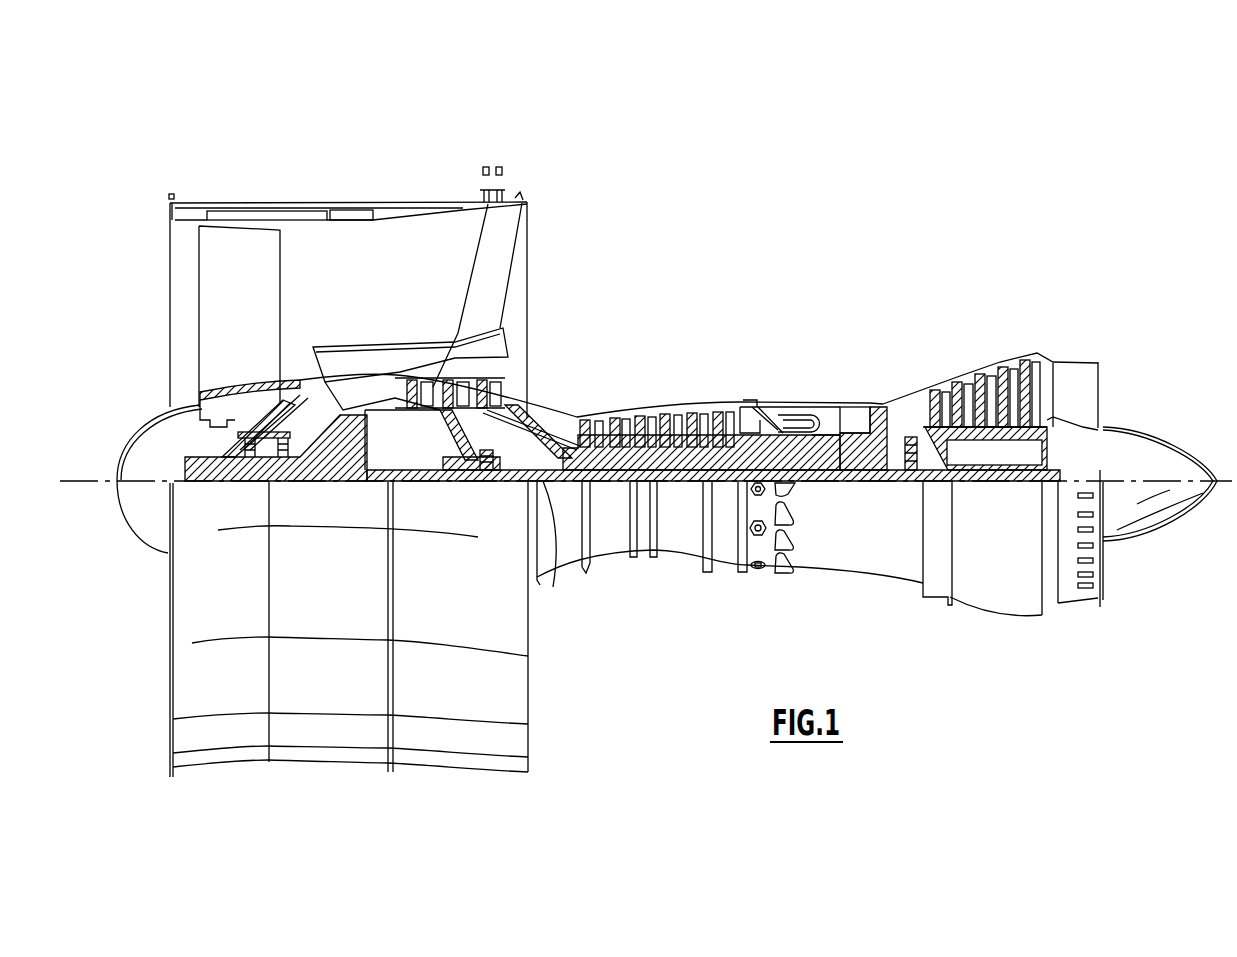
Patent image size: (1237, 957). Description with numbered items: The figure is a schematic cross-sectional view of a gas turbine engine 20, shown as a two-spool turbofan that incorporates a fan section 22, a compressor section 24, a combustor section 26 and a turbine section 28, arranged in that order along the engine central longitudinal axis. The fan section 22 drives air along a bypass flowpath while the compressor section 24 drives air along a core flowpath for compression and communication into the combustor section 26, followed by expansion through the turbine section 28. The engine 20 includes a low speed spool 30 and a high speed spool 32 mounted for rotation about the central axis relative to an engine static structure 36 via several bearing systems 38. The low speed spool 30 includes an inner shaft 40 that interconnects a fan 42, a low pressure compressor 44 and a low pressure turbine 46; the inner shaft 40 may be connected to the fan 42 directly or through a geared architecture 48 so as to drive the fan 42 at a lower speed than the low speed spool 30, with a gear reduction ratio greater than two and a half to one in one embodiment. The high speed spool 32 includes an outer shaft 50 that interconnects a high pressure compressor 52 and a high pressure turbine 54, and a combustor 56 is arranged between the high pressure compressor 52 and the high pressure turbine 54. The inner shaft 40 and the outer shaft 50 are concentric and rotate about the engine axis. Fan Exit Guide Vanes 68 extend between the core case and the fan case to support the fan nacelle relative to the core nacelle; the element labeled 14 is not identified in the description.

The nacelle 14 is at (281, 196).
The gas turbine engine 20 is at (812, 250).
The fan section 22 is at (341, 189).
The compressor section 24 is at (578, 395).
The combustor section 26 is at (792, 378).
The turbine section 28 is at (945, 340).
The low speed spool 30 is at (685, 494).
The high speed spool 32 is at (726, 427).
The engine static structure 36 is at (725, 577).
The bearing systems 38 is at (487, 460).
The inner shaft 40 is at (553, 585).
The fan 42 is at (248, 334).
The low pressure compressor 44 is at (505, 342).
The low pressure turbine 46 is at (987, 387).
The geared architecture 48 is at (355, 467).
The outer shaft 50 is at (808, 460).
The high pressure compressor 52 is at (651, 443).
The high pressure turbine 54 is at (863, 403).
The combustor 56 is at (800, 427).
The Fan Exit Guide Vanes 68 is at (493, 268).